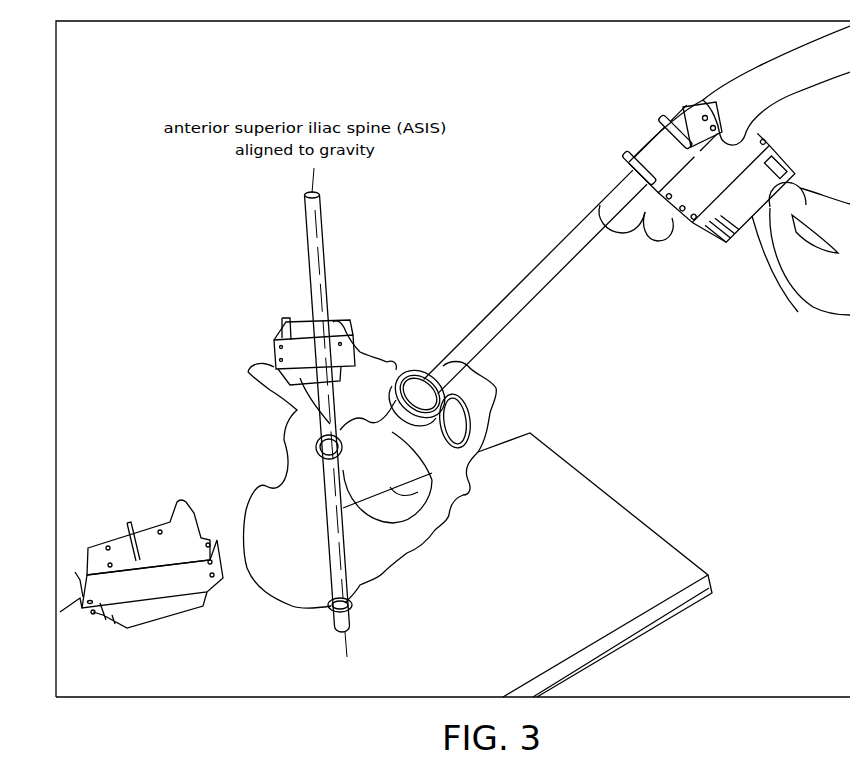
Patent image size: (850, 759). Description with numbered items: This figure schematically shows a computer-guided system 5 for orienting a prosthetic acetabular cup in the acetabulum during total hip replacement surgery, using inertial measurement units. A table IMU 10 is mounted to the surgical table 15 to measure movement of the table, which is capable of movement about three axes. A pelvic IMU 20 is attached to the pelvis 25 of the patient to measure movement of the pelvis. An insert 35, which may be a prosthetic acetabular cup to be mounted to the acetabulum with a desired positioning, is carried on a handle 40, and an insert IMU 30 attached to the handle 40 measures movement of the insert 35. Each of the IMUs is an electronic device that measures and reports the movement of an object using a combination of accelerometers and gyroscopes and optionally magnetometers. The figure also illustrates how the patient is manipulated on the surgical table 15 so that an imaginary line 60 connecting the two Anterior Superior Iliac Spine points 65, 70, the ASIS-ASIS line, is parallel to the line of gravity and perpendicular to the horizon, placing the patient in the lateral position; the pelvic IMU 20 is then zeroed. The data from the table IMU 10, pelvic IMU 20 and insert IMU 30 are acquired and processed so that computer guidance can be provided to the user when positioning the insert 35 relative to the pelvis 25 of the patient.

The computer-guided system 5 is at (510, 106).
The table inertial measurement unit 10 is at (150, 520).
The surgical table 15 is at (683, 540).
The pelvic IMU 20 is at (261, 347).
The pelvis 25 is at (243, 375).
The insert IMU 30 is at (733, 258).
The insert 35 is at (411, 366).
The handle 40 is at (541, 298).
The imaginary line 60 is at (355, 641).
The Anterior Superior Iliac Spine point 65 is at (324, 610).
The Anterior Superior Iliac Spine point 70 is at (315, 444).